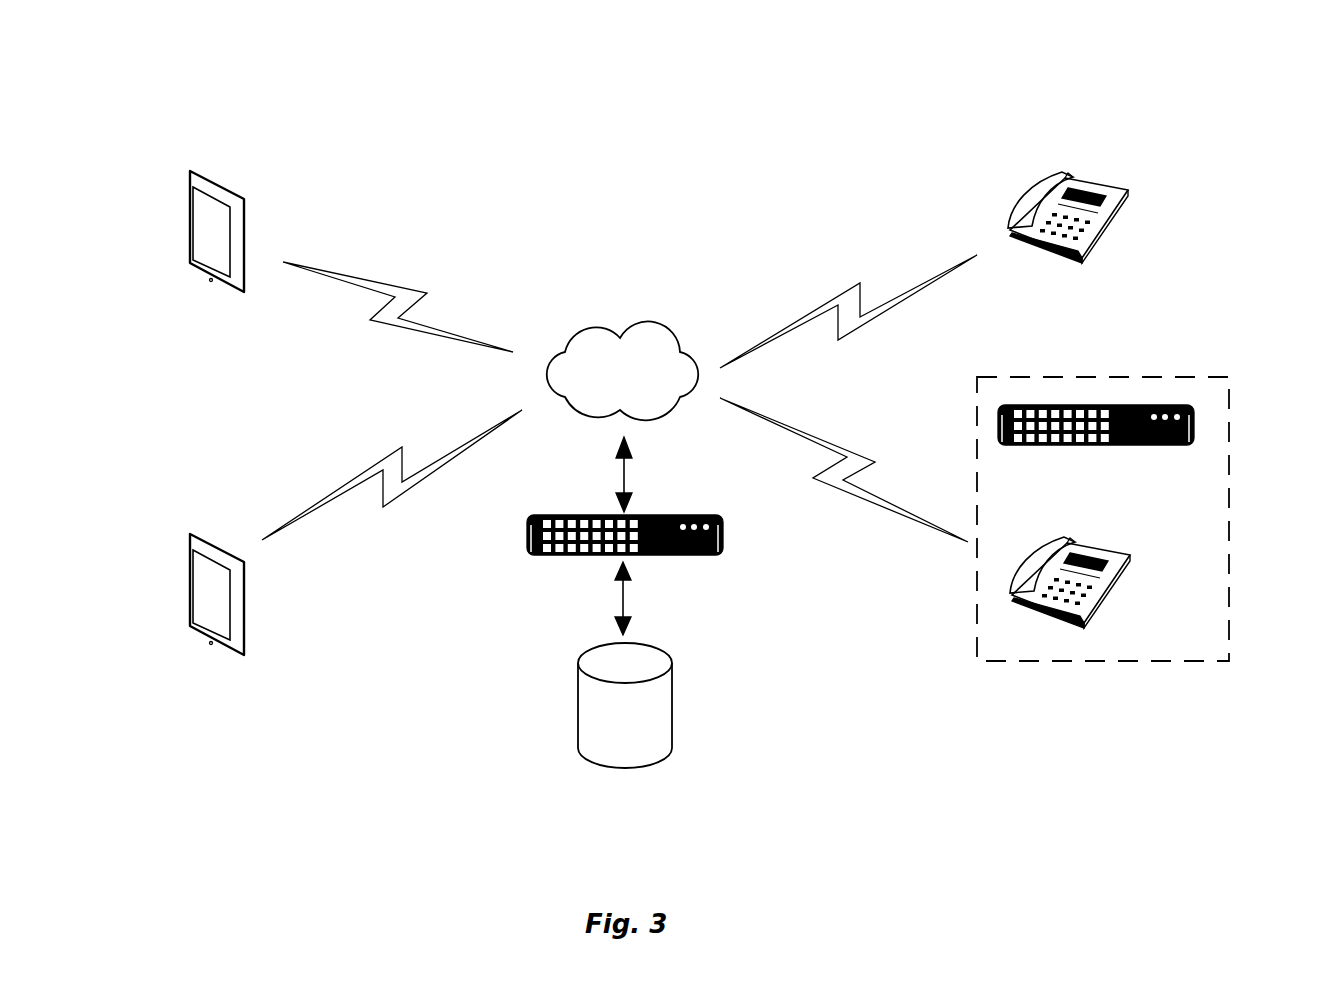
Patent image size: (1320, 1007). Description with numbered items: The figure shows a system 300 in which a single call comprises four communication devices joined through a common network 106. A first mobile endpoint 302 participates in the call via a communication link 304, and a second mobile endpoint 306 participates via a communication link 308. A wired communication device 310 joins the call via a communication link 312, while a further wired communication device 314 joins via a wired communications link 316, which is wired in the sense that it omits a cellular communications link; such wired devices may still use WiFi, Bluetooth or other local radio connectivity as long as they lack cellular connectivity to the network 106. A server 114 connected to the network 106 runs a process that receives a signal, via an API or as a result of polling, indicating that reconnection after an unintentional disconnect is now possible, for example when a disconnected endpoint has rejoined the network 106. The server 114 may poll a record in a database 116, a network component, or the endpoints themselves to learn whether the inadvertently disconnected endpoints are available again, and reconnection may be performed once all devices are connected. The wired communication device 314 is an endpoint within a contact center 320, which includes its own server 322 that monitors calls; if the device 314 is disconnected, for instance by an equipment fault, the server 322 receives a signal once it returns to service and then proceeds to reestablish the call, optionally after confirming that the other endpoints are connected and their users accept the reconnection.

The system 300 is at (1097, 88).
The first mobile endpoint 302 is at (192, 172).
The communication link 304 is at (417, 292).
The second mobile endpoint 306 is at (192, 537).
The communication link 308 is at (380, 460).
The network 106 is at (610, 330).
The server 114 is at (680, 513).
The database 116 is at (657, 652).
The wired communication device 310 is at (1118, 185).
The communication link 312 is at (838, 298).
The wired communication device 314 is at (1113, 552).
The wired communications link 316 is at (853, 452).
The contact center 320 is at (1133, 377).
The server 322 is at (1197, 423).